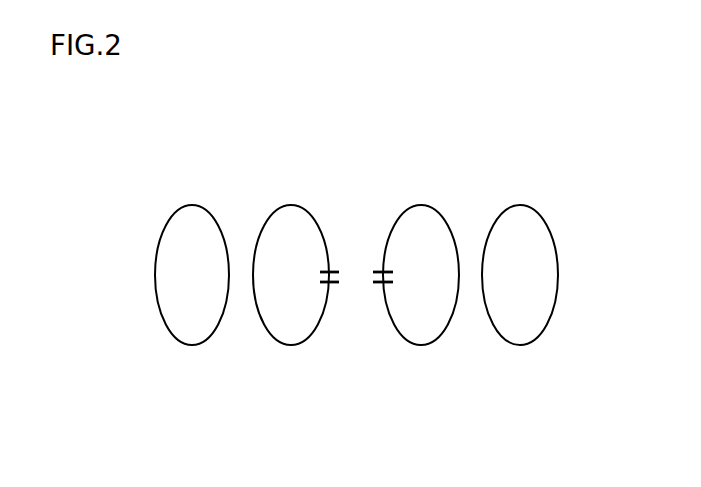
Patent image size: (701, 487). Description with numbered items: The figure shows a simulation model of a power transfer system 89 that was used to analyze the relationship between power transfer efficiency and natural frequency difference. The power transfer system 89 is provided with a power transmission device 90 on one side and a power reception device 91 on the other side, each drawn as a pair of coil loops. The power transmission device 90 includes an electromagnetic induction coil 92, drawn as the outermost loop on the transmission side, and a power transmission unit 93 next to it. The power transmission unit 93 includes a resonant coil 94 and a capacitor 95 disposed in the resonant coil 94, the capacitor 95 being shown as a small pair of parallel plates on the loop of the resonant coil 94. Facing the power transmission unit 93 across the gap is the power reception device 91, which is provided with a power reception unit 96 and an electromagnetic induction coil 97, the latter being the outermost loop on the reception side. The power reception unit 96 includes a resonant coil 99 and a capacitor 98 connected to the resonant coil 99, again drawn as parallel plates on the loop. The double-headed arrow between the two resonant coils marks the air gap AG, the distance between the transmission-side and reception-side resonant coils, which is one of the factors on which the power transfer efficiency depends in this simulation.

The power transfer system 89 is at (560, 181).
The power transmission device 90 is at (328, 417).
The power reception device 91 is at (540, 417).
The electromagnetic induction coil 92 is at (192, 345).
The power transmission unit 93 is at (350, 388).
The resonant coil 94 is at (287, 345).
The capacitor 95 is at (331, 283).
The power reception unit 96 is at (442, 388).
The electromagnetic induction coil 97 is at (520, 345).
The capacitor 98 is at (381, 283).
The resonant coil 99 is at (421, 345).
The air gap AG is at (423, 193).